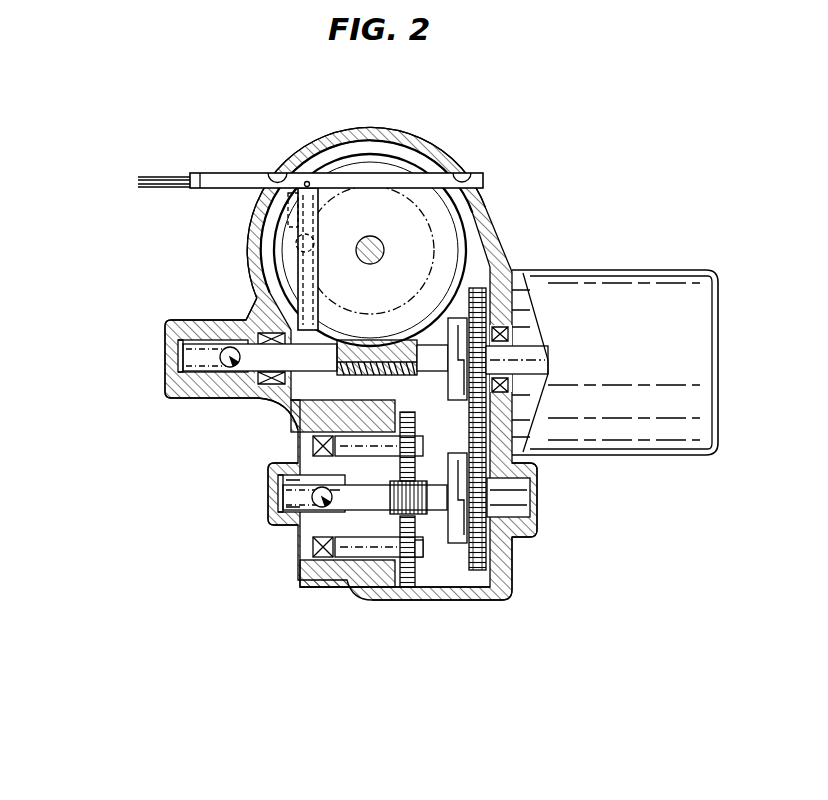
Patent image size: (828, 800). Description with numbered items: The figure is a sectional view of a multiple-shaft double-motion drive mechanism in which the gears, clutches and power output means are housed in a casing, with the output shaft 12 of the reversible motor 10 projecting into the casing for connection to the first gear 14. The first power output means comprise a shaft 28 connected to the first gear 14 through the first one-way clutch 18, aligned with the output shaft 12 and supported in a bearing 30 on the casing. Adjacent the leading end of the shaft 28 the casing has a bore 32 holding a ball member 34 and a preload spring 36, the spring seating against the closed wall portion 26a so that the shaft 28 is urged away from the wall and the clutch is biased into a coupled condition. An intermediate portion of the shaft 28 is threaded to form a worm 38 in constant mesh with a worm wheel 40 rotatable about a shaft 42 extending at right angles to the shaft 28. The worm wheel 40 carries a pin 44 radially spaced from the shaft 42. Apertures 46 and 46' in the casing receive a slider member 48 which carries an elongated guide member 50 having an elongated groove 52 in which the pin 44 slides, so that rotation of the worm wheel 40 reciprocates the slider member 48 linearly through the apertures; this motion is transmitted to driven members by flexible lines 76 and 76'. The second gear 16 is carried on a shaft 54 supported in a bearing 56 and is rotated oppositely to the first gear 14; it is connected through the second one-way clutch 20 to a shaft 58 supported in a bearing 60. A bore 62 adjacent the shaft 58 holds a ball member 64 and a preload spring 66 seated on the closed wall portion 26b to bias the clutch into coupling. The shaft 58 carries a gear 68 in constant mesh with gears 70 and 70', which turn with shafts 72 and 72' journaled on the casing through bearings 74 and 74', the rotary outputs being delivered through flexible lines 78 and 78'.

The reversible motor 10 is at (658, 457).
The output shaft 12 is at (533, 390).
The first gear 14 is at (478, 290).
The second gear 16 is at (492, 567).
The first one-way clutch 18 is at (469, 302).
The second one-way clutch 20 is at (477, 600).
The closed wall portion 26a is at (166, 348).
The closed wall portion 26b is at (270, 504).
The shaft 28 is at (330, 340).
The bearing 30 is at (283, 343).
The bore 32 is at (166, 380).
The ball member 34 is at (244, 320).
The preload spring 36 is at (186, 320).
The worm 38 is at (403, 378).
The worm wheel 40 is at (405, 153).
The shaft 42 is at (385, 258).
The pin 44 is at (309, 256).
The aperture 46 is at (336, 166).
The aperture 46' is at (487, 163).
The slider member 48 is at (332, 133).
The guide member 50 is at (320, 220).
The elongated groove 52 is at (268, 214).
The shaft 54 is at (532, 486).
The bearing 56 is at (520, 538).
The shaft 58 is at (438, 520).
The bearing 60 is at (380, 510).
The bore 62 is at (270, 468).
The ball member 64 is at (328, 493).
The preload spring 66 is at (278, 493).
The gear 68 is at (415, 572).
The gear 70 is at (394, 431).
The gear 70' is at (398, 579).
The shaft 72 is at (400, 433).
The shaft 72' is at (363, 575).
The bearing 74 is at (343, 416).
The bearing 74' is at (347, 601).
The flexible line 76 is at (165, 166).
The flexible line 76' is at (157, 198).
The flexible line 78 is at (245, 436).
The flexible line 78' is at (246, 559).